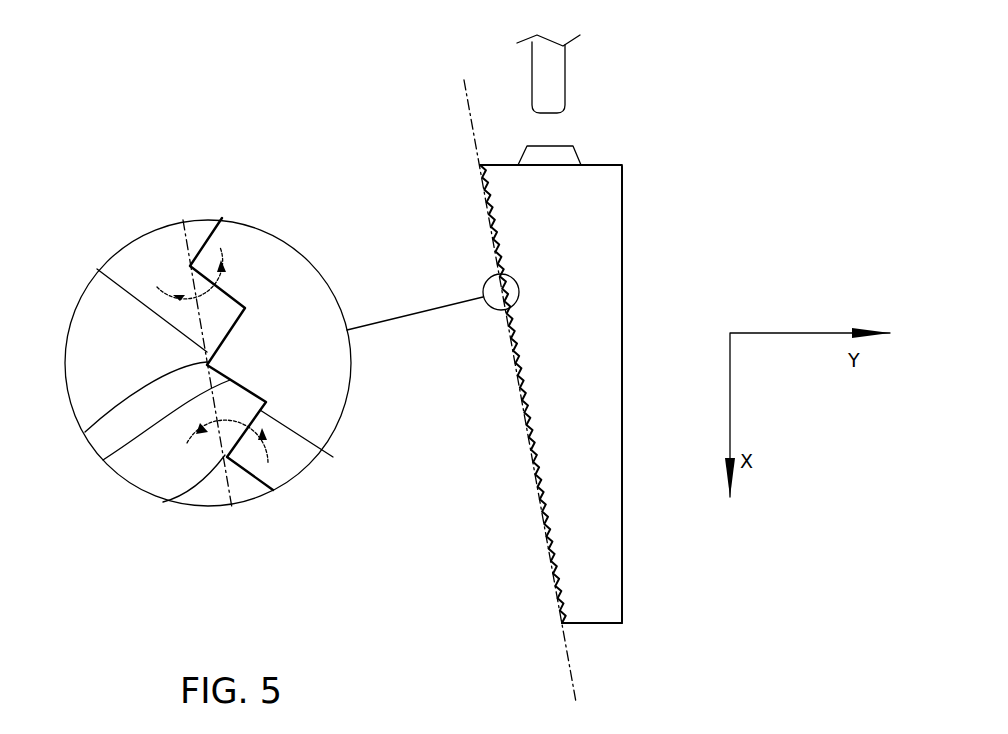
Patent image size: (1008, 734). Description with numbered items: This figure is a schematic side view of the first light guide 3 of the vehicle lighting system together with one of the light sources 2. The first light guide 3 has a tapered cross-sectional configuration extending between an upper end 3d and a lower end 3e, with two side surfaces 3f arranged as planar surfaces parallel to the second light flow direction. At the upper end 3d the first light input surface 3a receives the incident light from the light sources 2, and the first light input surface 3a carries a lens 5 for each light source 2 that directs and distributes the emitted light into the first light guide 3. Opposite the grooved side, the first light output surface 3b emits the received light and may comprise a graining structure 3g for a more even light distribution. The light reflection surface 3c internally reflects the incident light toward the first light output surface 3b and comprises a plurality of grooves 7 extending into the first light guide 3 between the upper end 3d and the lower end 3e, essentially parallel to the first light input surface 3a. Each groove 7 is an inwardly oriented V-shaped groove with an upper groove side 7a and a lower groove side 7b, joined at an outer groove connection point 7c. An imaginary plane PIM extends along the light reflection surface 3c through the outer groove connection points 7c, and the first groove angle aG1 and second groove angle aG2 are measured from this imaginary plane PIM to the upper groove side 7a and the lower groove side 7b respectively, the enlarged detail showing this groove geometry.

The light source 2 is at (548, 76).
The first light guide 3 is at (697, 178).
The first light input surface 3a is at (605, 165).
The first light output surface 3b is at (622, 265).
The light reflection surface 3c is at (540, 503).
The upper end 3d is at (465, 159).
The lower end 3e is at (552, 625).
The side surface 3f is at (582, 440).
The graining structure 3g is at (622, 583).
The lens 5 is at (557, 157).
The groove 7 is at (532, 450).
The upper groove side 7a is at (103, 460).
The lower groove side 7b is at (97, 269).
The outer groove connection point 7c is at (85, 432).
The imaginary plane PIM is at (575, 678).
The first groove angle aG1 is at (235, 297).
The second groove angle aG2 is at (333, 455).